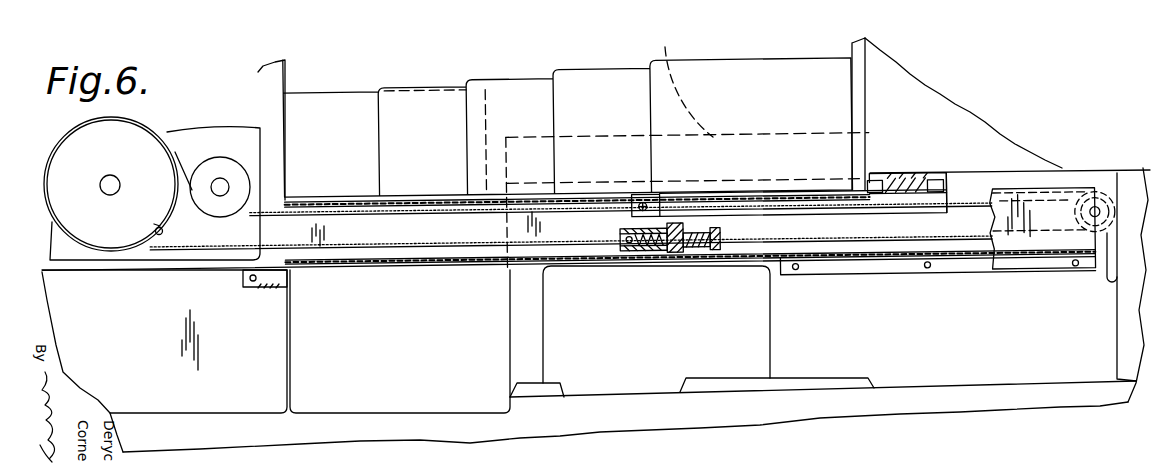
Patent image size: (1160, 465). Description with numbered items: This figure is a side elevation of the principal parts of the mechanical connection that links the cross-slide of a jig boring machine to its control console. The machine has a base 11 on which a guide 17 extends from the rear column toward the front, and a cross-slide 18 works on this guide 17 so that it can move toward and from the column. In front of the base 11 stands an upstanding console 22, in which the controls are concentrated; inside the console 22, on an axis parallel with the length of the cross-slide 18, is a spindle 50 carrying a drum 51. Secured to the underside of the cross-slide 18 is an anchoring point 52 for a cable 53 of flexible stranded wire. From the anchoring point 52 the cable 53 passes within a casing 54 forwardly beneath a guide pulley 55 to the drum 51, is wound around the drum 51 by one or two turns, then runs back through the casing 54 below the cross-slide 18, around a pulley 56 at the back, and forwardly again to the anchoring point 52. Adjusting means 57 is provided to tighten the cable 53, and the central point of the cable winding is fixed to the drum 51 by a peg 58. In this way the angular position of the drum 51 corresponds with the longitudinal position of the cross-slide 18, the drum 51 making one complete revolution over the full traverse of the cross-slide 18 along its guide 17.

The base 11 is at (738, 352).
The guide 17 is at (683, 80).
The cross-slide 18 is at (933, 100).
The console 22 is at (275, 353).
The spindle 50 is at (120, 187).
The drum 51 is at (133, 138).
The anchoring point 52 is at (647, 207).
The cable 53 is at (468, 216).
The casing 54 is at (348, 257).
The guide pulley 55 is at (223, 158).
The pulley 56 is at (1085, 242).
The adjusting means 57 is at (700, 255).
The peg 58 is at (166, 233).